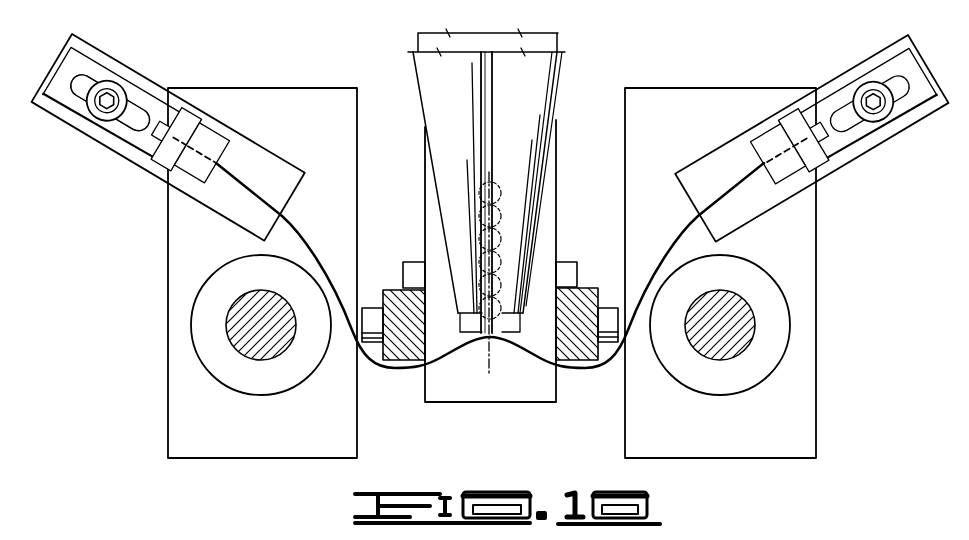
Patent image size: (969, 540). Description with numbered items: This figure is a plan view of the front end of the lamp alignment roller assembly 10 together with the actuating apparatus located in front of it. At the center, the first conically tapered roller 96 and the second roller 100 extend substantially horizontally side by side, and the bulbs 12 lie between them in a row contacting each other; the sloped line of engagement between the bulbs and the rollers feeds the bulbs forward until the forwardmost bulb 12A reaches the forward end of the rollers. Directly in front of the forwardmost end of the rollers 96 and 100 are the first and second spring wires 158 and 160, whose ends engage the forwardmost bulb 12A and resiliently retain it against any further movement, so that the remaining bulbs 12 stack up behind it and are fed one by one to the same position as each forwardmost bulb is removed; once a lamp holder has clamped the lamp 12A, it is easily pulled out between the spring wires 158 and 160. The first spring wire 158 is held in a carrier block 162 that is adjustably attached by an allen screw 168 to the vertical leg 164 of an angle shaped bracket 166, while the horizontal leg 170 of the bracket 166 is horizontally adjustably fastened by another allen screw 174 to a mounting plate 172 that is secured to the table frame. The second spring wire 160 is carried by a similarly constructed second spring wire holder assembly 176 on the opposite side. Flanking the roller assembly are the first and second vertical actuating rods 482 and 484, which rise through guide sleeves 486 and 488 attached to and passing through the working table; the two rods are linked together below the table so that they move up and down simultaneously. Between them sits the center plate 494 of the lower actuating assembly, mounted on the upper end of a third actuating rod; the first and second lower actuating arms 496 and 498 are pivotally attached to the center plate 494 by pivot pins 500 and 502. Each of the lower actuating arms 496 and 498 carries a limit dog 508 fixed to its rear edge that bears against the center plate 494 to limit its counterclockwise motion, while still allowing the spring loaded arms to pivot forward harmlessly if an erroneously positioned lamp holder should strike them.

The lamp alignment roller assembly 10 is at (567, 97).
The bulbs 12 is at (500, 197).
The forwardmost bulb 12A is at (486, 373).
The first conically tapered roller 96 is at (436, 77).
The second roller 100 is at (540, 73).
The first spring wire 158 is at (304, 241).
The second spring wire 160 is at (676, 242).
The carrier block 162 is at (203, 140).
The vertical leg 164 is at (168, 162).
The angle shaped bracket 166 is at (137, 141).
The horizontal leg 170 is at (110, 103).
The allen screw 168 is at (166, 122).
The mounting plate 172 is at (50, 105).
The allen screw 174 is at (95, 113).
The second spring wire holder assembly 176 is at (868, 156).
The first vertical actuating rod 482 is at (247, 311).
The second vertical actuating rod 484 is at (728, 340).
The guide sleeve 486 is at (205, 350).
The guide sleeve 488 is at (778, 312).
The center plate 494 is at (493, 393).
The first lower actuating arm 496 is at (405, 352).
The second lower actuating arm 498 is at (578, 353).
The pivot pin 500 is at (371, 307).
The pivot pin 502 is at (609, 307).
The limit dog 508 is at (416, 262).